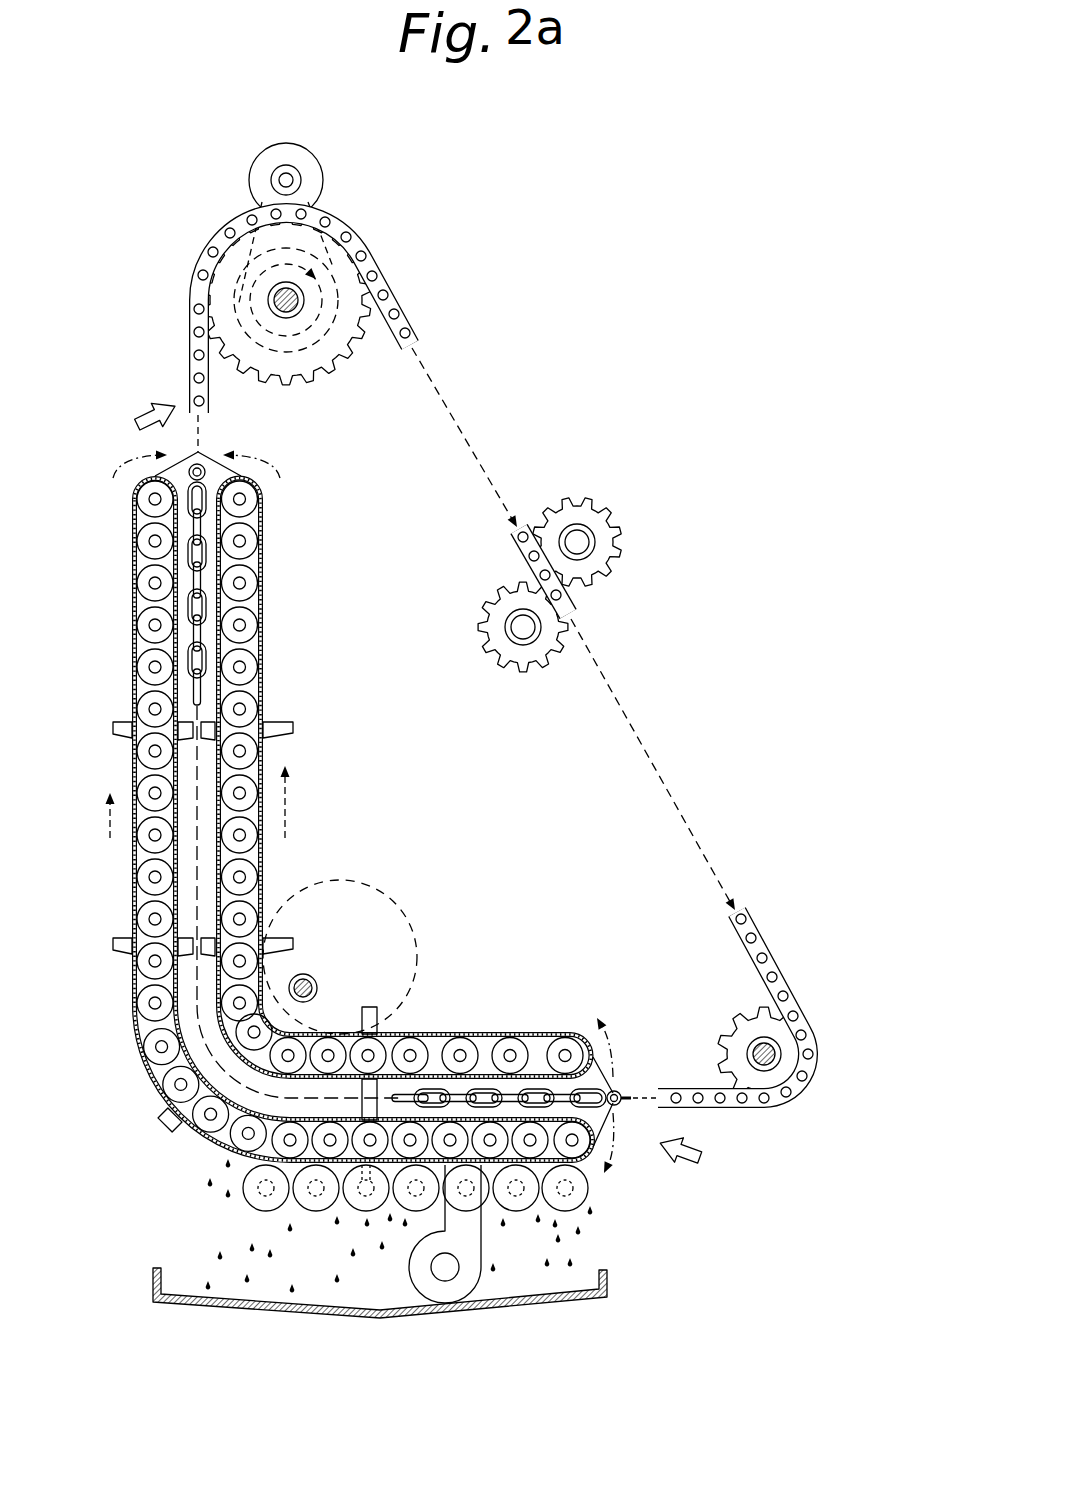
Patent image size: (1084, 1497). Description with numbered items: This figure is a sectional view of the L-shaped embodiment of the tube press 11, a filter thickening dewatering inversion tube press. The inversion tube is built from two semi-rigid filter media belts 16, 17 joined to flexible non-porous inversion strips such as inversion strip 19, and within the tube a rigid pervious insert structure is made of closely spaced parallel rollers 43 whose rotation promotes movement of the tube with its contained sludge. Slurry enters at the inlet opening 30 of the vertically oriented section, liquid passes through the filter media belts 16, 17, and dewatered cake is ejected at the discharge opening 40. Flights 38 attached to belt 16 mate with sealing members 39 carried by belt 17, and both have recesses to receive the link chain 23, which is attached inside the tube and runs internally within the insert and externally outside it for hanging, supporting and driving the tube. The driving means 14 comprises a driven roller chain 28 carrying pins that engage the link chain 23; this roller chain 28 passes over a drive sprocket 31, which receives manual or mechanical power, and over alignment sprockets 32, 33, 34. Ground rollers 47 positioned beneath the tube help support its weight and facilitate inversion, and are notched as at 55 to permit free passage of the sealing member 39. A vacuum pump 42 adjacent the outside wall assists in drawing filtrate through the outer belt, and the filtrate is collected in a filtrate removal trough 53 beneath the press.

The tube press 11 is at (522, 331).
The driving means 14 is at (205, 222).
The filter media belt 16 is at (263, 607).
The filter media belt 17 is at (133, 607).
The inversion strip 19 is at (185, 638).
The link chain 23 is at (203, 457).
The roller chain 28 is at (394, 302).
The inlet opening 30 is at (124, 446).
The drive sprocket 31 is at (330, 363).
The alignment sprocket 32 is at (580, 497).
The alignment sprocket 33 is at (482, 626).
The alignment sprocket 34 is at (405, 923).
The flight 38 is at (280, 725).
The sealing member 39 is at (122, 737).
The discharge opening 40 is at (652, 1117).
The vacuum pump 42 is at (420, 1275).
The rollers 43 is at (152, 543).
The ground rollers 47 is at (308, 1205).
The filtrate removal trough 53 is at (587, 1296).
The notch 55 is at (370, 1197).